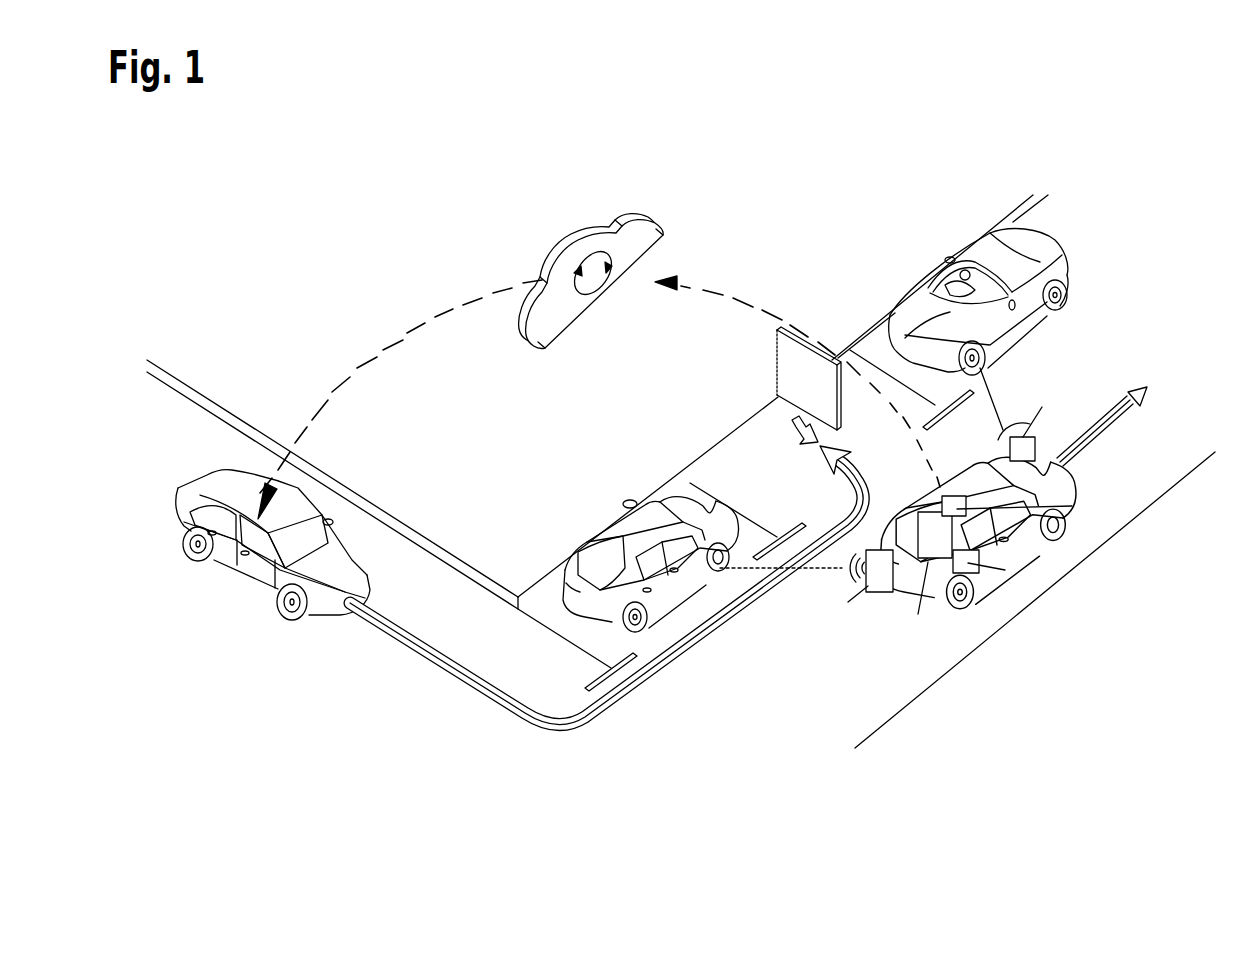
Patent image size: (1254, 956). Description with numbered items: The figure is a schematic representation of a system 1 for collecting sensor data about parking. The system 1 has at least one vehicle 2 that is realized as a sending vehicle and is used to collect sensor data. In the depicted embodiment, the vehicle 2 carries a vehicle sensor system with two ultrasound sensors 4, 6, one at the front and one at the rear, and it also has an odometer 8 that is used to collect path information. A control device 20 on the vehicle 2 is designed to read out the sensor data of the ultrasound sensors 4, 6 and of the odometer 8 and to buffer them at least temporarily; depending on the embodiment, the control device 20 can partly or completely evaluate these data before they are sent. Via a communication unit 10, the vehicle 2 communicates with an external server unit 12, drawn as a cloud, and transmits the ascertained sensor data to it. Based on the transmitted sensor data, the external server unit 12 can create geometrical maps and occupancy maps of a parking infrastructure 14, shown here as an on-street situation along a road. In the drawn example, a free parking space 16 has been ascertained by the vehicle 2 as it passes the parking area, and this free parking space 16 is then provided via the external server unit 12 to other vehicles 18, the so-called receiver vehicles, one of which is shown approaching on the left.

The system 1 is at (280, 206).
The vehicle 2 is at (1053, 480).
The ultrasound sensor 4 is at (1040, 453).
The ultrasound sensor 6 is at (877, 592).
The odometer 8 is at (972, 566).
The communication unit 10 is at (944, 500).
The external server unit 12 is at (604, 194).
The parking infrastructure 14 is at (1172, 212).
The free parking space 16 is at (736, 452).
The other vehicles 18 is at (208, 478).
The control device 20 is at (935, 520).